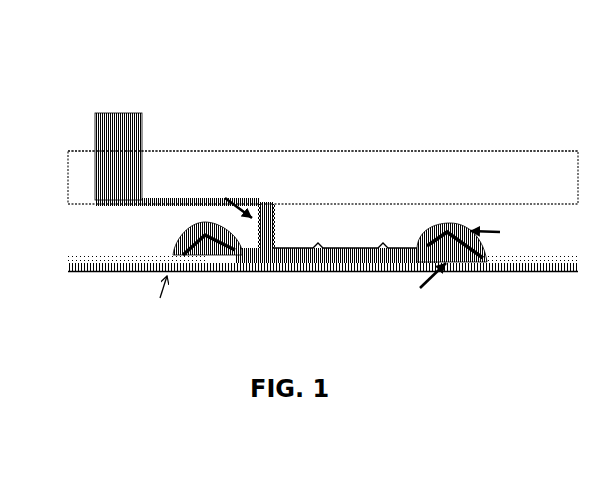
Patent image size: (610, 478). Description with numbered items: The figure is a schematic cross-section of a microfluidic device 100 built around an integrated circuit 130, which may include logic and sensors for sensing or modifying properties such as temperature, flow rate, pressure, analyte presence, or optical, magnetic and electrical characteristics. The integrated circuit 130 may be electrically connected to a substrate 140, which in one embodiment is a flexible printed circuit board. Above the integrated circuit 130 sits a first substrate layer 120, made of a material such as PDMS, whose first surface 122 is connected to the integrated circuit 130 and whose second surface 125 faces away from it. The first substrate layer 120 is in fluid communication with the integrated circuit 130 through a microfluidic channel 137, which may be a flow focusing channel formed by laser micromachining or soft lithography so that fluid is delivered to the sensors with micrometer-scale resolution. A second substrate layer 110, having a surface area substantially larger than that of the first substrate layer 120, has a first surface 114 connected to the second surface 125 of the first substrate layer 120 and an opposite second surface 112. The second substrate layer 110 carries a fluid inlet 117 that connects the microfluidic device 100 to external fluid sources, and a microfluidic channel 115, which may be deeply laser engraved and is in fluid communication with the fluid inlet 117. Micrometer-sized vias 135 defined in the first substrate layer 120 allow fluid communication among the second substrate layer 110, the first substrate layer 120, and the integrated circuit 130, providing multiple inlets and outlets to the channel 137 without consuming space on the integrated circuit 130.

The microfluidic device 100 is at (312, 212).
The second substrate layer 110 is at (382, 163).
The second surface 112 is at (318, 143).
The first surface 114 is at (457, 205).
The microfluidic channel 115 is at (187, 199).
The fluid inlet 117 is at (130, 113).
The first substrate layer 120 is at (330, 220).
The first surface 122 is at (395, 268).
The second surface 125 is at (360, 203).
The integrated circuit 130 is at (233, 268).
The vias 135 is at (262, 272).
The microfluidic channel 137 is at (310, 272).
The substrate 140 is at (162, 288).